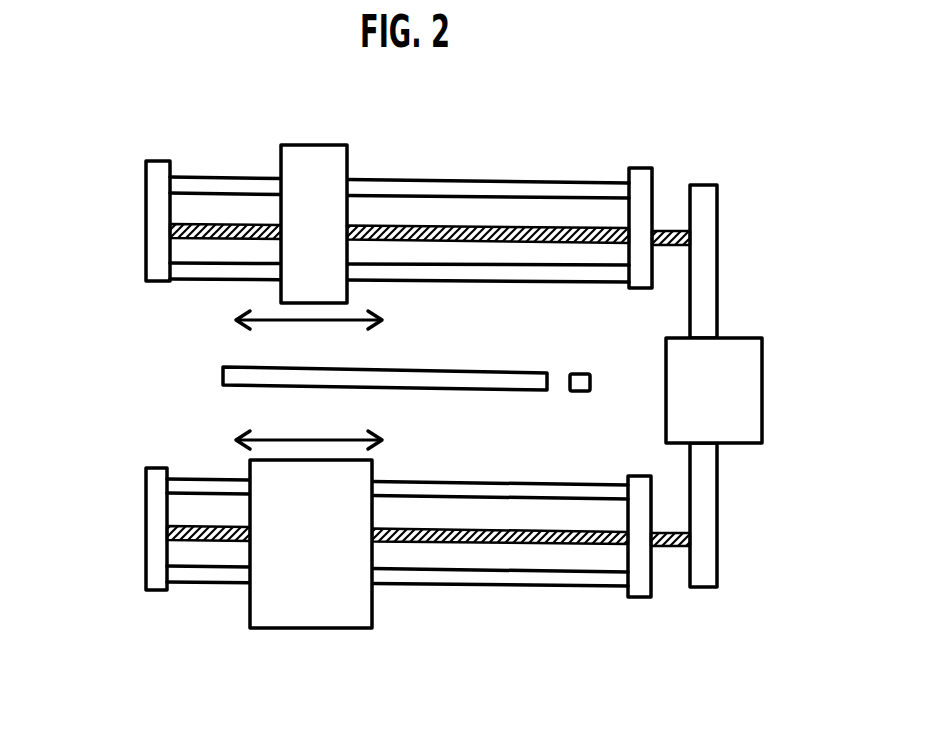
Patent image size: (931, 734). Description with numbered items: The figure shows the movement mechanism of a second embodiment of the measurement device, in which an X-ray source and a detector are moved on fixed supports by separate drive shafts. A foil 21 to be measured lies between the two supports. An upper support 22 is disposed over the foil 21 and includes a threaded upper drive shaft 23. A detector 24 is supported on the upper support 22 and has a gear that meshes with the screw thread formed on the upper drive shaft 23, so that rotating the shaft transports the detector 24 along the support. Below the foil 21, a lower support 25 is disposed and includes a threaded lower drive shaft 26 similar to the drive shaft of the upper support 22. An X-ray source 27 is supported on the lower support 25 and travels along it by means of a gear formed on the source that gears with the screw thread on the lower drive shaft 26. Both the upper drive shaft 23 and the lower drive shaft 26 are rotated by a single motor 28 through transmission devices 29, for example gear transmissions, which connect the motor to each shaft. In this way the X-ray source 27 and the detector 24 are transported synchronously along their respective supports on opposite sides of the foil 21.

The foil 21 is at (223, 382).
The upper support 22 is at (508, 192).
The upper drive shaft 23 is at (230, 225).
The detector 24 is at (320, 168).
The lower support 25 is at (570, 577).
The lower drive shaft 26 is at (452, 542).
The X-ray source 27 is at (285, 617).
The motor 28 is at (746, 353).
The transmission devices 29 is at (712, 210).